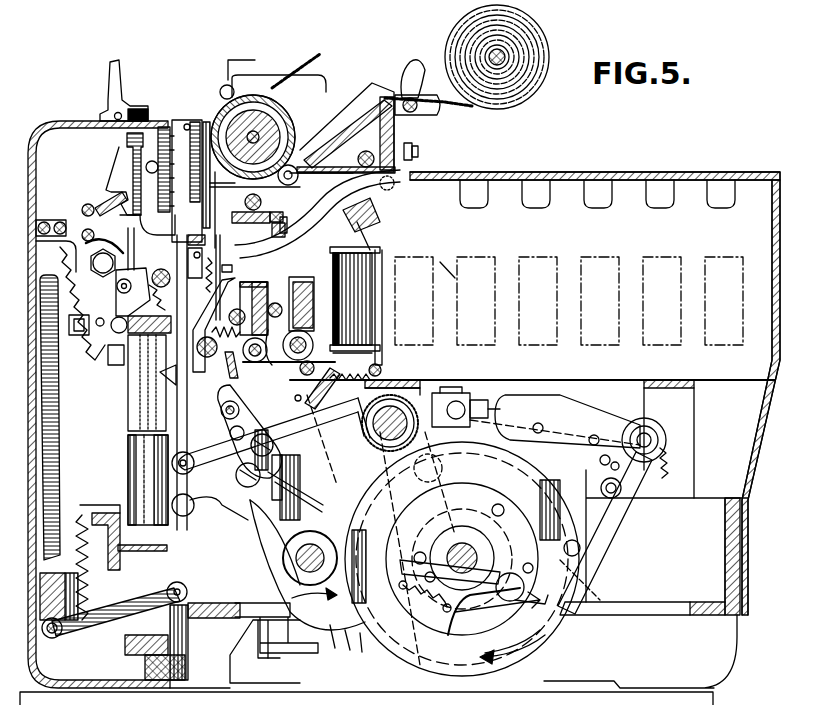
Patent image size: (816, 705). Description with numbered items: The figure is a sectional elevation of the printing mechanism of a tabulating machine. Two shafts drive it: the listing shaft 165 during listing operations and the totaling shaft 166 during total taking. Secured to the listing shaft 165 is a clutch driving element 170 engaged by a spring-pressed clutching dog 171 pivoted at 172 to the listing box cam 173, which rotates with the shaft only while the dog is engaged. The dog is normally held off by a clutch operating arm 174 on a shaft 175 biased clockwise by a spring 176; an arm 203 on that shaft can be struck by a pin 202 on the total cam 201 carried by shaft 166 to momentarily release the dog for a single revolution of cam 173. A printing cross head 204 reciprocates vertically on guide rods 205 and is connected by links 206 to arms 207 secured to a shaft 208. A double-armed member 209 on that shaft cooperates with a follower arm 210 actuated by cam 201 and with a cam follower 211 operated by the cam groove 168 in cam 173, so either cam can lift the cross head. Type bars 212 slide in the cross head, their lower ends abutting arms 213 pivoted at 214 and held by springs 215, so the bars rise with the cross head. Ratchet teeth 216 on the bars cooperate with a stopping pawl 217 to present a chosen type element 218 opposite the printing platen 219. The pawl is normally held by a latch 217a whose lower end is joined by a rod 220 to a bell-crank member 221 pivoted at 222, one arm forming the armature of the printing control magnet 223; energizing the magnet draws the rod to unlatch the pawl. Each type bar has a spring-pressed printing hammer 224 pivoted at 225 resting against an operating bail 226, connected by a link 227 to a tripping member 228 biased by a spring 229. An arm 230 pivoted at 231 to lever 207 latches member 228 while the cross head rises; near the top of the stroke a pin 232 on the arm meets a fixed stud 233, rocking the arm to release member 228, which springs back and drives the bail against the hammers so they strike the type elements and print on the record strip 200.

The record strip 200 is at (322, 55).
The type elements 218 is at (172, 148).
The printing platen 219 is at (283, 110).
The printing hammer 224 is at (127, 145).
The pivot 225 is at (176, 225).
The operating bail 226 is at (132, 225).
The pivot 222 is at (360, 275).
The printing control magnet 223 is at (440, 262).
The link 227 is at (121, 288).
The spring-pressed pivoted latch 217a is at (236, 280).
The stopping pawl 217 is at (203, 322).
The bell-crank member 221 is at (375, 352).
The rod 220 is at (381, 370).
The shaft 208 is at (400, 418).
The cam follower 211 is at (470, 390).
The tripping member 228 is at (92, 335).
The arm 230 is at (115, 368).
The fixed stud 233 is at (140, 385).
The pin 232 is at (160, 398).
The ratchet teeth 216 is at (177, 424).
The type bars 212 is at (140, 440).
The spring 229 is at (60, 462).
The printing cross head 204 is at (110, 512).
The arms 207 is at (310, 420).
The double-armed member 209 is at (335, 410).
The pivot 231 is at (272, 447).
The follower arm 210 is at (310, 495).
The links 206 is at (200, 500).
The shaft 175 is at (665, 443).
The spring 176 is at (670, 472).
The clutch operating arm 174 is at (600, 505).
The clutch driving element 170 is at (478, 540).
The listing shaft 165 is at (470, 558).
The cam groove 168 is at (530, 565).
The totaling shaft 166 is at (297, 567).
The pin 202 is at (355, 606).
The pivot 172 is at (540, 637).
The listing box cam 173 is at (537, 648).
The clutching dog 171 is at (445, 615).
The cam 201 is at (315, 627).
The arm 203 is at (277, 660).
The guide rods 205 is at (120, 632).
The arms 213 is at (78, 642).
The pivot 214 is at (56, 632).
The springs 215 is at (90, 598).